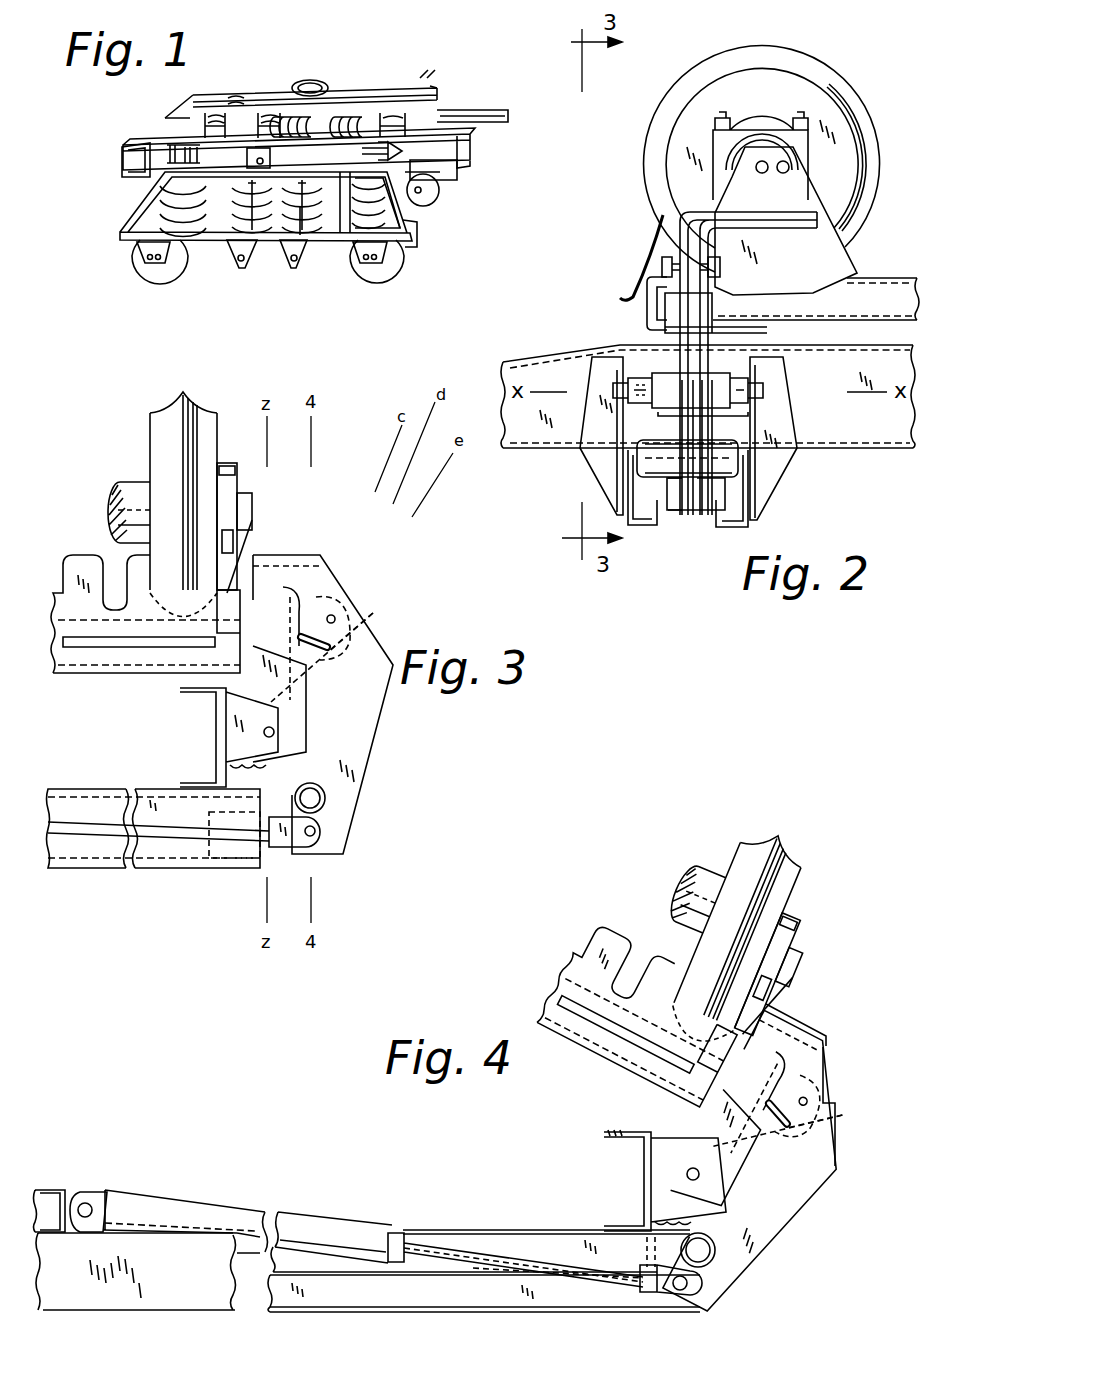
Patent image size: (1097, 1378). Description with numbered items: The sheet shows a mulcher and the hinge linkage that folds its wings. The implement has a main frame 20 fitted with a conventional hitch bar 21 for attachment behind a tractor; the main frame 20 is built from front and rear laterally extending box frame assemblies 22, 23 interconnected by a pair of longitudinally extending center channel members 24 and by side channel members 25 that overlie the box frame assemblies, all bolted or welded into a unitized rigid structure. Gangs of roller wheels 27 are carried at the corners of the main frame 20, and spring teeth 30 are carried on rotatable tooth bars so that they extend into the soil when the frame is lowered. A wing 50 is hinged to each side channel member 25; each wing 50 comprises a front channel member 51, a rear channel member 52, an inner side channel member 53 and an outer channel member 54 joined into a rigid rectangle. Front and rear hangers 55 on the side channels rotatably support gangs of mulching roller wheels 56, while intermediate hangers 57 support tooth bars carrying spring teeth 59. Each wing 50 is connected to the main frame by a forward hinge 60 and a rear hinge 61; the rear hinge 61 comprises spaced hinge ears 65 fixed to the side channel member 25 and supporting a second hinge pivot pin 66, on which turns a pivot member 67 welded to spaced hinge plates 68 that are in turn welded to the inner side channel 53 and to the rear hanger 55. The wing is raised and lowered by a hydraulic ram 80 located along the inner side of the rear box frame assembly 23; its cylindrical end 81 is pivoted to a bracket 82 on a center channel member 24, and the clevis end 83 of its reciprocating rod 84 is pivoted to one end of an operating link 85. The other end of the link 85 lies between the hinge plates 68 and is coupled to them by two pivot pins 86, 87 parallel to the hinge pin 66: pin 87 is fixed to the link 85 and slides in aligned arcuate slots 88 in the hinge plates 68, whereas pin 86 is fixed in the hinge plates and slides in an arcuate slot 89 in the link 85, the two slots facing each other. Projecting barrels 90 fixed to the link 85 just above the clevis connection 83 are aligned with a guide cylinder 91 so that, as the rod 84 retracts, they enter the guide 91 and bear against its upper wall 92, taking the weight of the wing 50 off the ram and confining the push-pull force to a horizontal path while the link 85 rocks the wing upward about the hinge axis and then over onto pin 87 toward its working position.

In FIG. 1, the main frame 20 is at (176, 102).
In FIG. 1, the hitch bar 21 is at (482, 127).
In FIG. 1, the front box frame assembly 22 is at (425, 183).
In FIG. 1, the rear box frame assembly 23 is at (122, 172).
In FIG. 1, the center channel members 24 is at (438, 103).
In FIG. 4, the center channel members 24 is at (45, 1190).
In FIG. 1, the side channel members 25 is at (470, 150).
In FIG. 2, the side channel members 25 is at (898, 432).
In FIG. 1, the roller wheels 27 is at (197, 130).
In FIG. 1, the spring teeth 30 is at (236, 128).
In FIG. 1, the wing 50 is at (117, 221).
In FIG. 3, the wing 50 is at (107, 520).
In FIG. 4, the wing 50 is at (625, 1085).
In FIG. 1, the front channel member 51 is at (407, 218).
In FIG. 1, the rear channel member 52 is at (137, 212).
In FIG. 1, the inner side channel member 53 is at (303, 150).
In FIG. 2, the inner side channel member 53 is at (895, 312).
In FIG. 1, the outer channel member 54 is at (270, 241).
In FIG. 1, the hangers 55 is at (140, 253).
In FIG. 2, the hangers 55 is at (812, 265).
In FIG. 3, the hangers 55 is at (145, 614).
In FIG. 1, the mulching roller wheels 56 is at (173, 267).
In FIG. 2, the mulching roller wheels 56 is at (762, 159).
In FIG. 3, the mulching roller wheels 56 is at (152, 416).
In FIG. 4, the mulching roller wheels 56 is at (735, 868).
In FIG. 1, the intermediate hangers 57 is at (229, 247).
In FIG. 1, the spring teeth 59 is at (320, 207).
In FIG. 1, the forward hinge 60 is at (362, 150).
In FIG. 1, the rear hinge 61 is at (167, 153).
In FIG. 2, the rear hinge 61 is at (628, 323).
In FIG. 2, the hinge ears 65 is at (580, 460).
In FIG. 2, the second hinge pivot pin 66 is at (762, 392).
In FIG. 3, the second hinge pivot pin 66 is at (262, 730).
In FIG. 4, the second hinge pivot pin 66 is at (690, 1160).
In FIG. 2, the pivot member 67 is at (737, 410).
In FIG. 2, the hinge plates 68 is at (808, 213).
In FIG. 4, the hinge plates 68 is at (812, 1027).
In FIG. 4, the hydraulic ram 80 is at (167, 1226).
In FIG. 4, the cylindrical end 81 is at (108, 1195).
In FIG. 4, the bracket 82 is at (85, 1202).
In FIG. 2, the clevis end 83 is at (707, 493).
In FIG. 3, the clevis end 83 is at (318, 842).
In FIG. 4, the clevis end 83 is at (695, 1290).
In FIG. 3, the reciprocating rod 84 is at (215, 838).
In FIG. 4, the reciprocating rod 84 is at (440, 1240).
In FIG. 2, the operating link 85 is at (693, 427).
In FIG. 3, the operating link 85 is at (352, 746).
In FIG. 4, the operating link 85 is at (776, 1228).
In FIG. 3, the pivot pin 86 is at (333, 612).
In FIG. 4, the pivot pin 86 is at (824, 1102).
In FIG. 3, the pivot pin 87 is at (295, 600).
In FIG. 4, the pivot pin 87 is at (782, 1096).
In FIG. 3, the arcuate slots 88 is at (328, 650).
In FIG. 4, the arcuate slots 88 is at (790, 1140).
In FIG. 3, the arcuate slot 89 is at (373, 613).
In FIG. 4, the arcuate slot 89 is at (836, 1142).
In FIG. 2, the projecting barrels 90 is at (660, 440).
In FIG. 3, the projecting barrels 90 is at (325, 798).
In FIG. 4, the projecting barrels 90 is at (722, 1255).
In FIG. 2, the guide cylinder 91 is at (643, 482).
In FIG. 3, the guide cylinder 91 is at (160, 800).
In FIG. 4, the guide cylinder 91 is at (555, 1243).
In FIG. 4, the upper wall 92 is at (478, 1240).